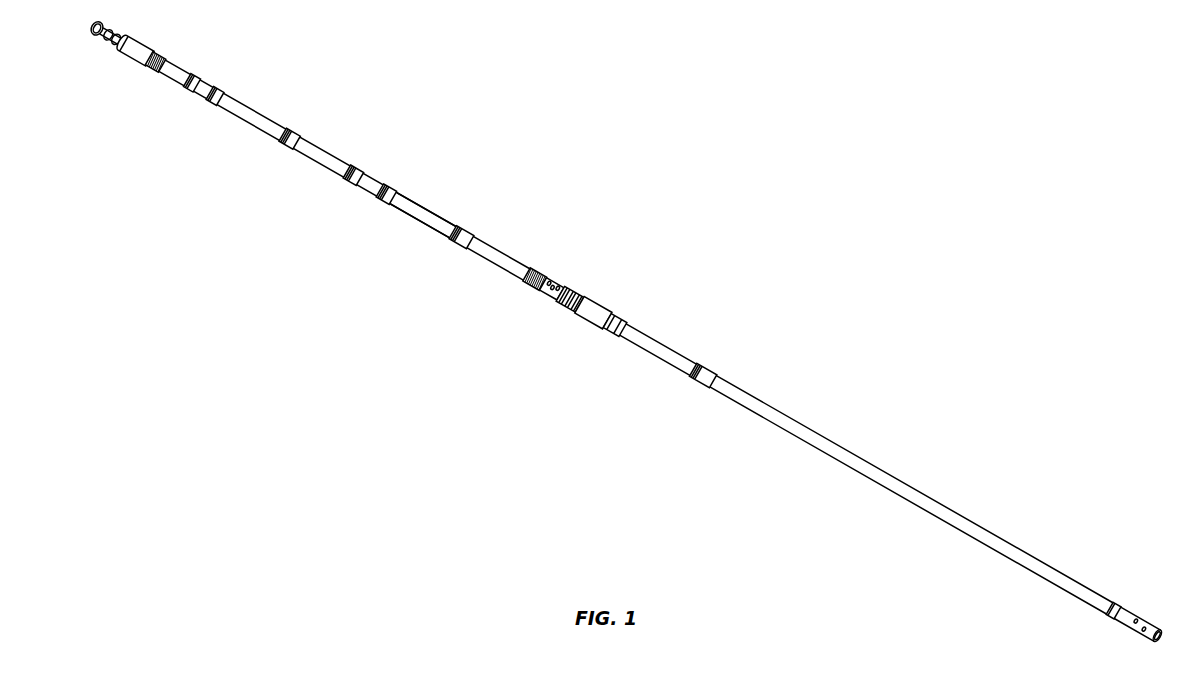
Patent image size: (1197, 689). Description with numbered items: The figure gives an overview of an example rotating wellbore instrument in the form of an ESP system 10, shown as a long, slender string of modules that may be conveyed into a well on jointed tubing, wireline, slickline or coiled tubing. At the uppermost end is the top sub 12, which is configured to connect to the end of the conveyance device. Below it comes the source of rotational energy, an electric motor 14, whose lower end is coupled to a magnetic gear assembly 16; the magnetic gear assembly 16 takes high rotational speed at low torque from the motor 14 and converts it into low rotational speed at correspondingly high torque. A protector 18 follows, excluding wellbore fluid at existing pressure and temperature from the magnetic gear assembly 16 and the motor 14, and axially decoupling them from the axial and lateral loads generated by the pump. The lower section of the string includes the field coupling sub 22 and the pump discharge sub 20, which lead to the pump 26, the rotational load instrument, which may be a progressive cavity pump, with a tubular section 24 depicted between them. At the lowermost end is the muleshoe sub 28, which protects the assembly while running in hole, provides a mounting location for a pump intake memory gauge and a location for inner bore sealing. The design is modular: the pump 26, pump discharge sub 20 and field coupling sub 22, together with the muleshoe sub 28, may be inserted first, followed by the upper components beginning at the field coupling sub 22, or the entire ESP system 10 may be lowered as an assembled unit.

The ESP system 10 is at (375, 137).
The top sub 12 is at (110, 49).
The electric motor 14 is at (264, 107).
The magnetic gear assembly 16 is at (316, 172).
The protector 18 is at (482, 250).
The pump discharge sub 20 is at (545, 298).
The field coupling sub 22 is at (601, 303).
The distal tube section 24 is at (664, 341).
The pump 26 is at (878, 489).
The muleshoe sub 28 is at (1141, 615).